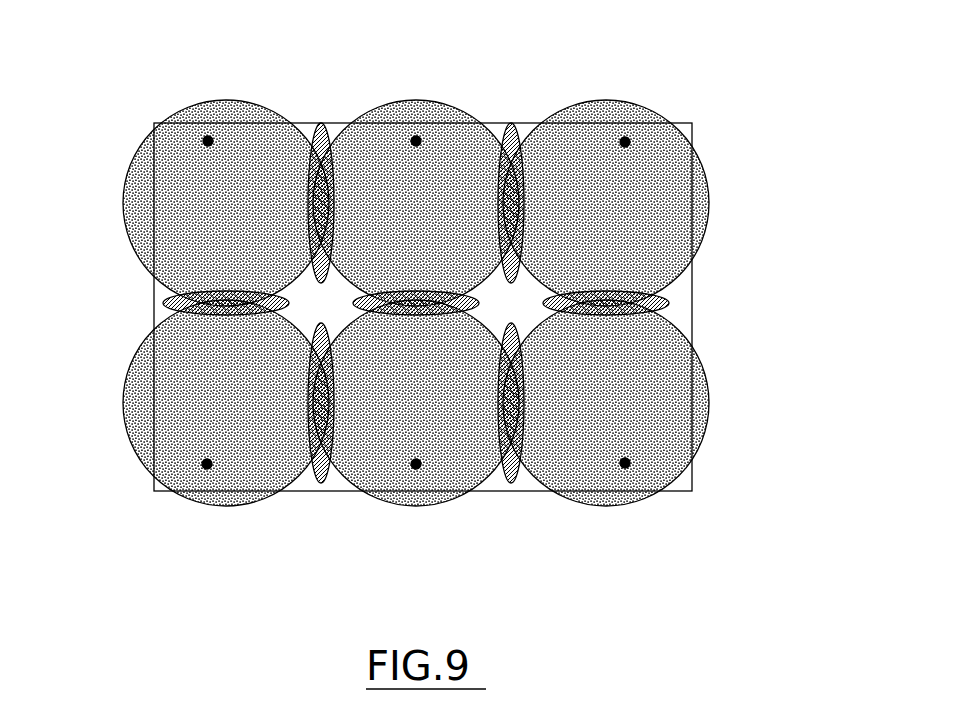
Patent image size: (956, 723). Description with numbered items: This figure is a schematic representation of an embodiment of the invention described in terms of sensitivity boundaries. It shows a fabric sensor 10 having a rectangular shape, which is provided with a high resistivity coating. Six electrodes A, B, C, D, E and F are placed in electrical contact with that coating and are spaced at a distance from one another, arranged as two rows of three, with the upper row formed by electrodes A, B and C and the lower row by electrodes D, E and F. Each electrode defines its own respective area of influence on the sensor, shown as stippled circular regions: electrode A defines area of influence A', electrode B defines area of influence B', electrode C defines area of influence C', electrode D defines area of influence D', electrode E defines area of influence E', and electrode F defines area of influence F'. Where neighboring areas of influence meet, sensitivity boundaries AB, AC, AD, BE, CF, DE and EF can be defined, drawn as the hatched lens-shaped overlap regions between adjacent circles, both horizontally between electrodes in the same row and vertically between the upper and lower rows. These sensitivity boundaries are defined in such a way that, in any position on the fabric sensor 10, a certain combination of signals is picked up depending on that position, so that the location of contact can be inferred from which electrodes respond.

The fabric sensor 10 is at (107, 91).
The electrode A is at (171, 82).
The electrode B is at (382, 77).
The electrode C is at (585, 77).
The electrode D is at (161, 514).
The electrode E is at (391, 515).
The electrode F is at (590, 508).
The area of influence A' is at (188, 203).
The area of influence B' is at (416, 157).
The area of influence C' is at (634, 203).
The area of influence D' is at (183, 403).
The area of influence E' is at (415, 445).
The area of influence F' is at (629, 403).
The sensitivity boundary AB is at (313, 140).
The sensitivity boundary AC is at (500, 138).
The sensitivity boundary AD is at (147, 282).
The sensitivity boundary BE is at (370, 302).
The sensitivity boundary CF is at (640, 296).
The sensitivity boundary DE is at (312, 440).
The sensitivity boundary EF is at (500, 432).